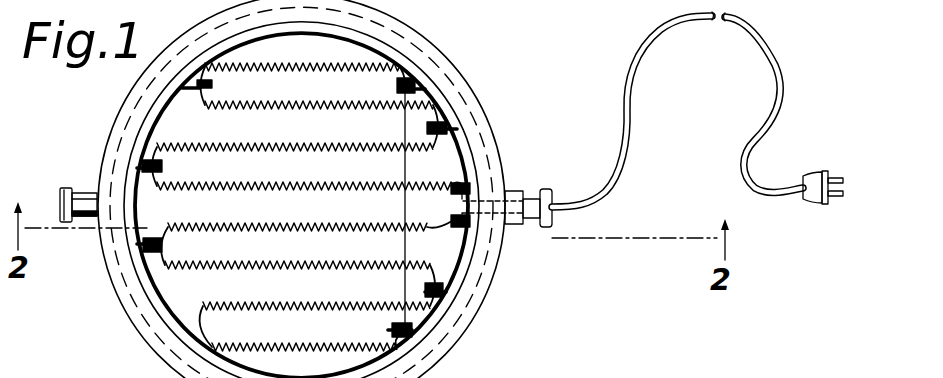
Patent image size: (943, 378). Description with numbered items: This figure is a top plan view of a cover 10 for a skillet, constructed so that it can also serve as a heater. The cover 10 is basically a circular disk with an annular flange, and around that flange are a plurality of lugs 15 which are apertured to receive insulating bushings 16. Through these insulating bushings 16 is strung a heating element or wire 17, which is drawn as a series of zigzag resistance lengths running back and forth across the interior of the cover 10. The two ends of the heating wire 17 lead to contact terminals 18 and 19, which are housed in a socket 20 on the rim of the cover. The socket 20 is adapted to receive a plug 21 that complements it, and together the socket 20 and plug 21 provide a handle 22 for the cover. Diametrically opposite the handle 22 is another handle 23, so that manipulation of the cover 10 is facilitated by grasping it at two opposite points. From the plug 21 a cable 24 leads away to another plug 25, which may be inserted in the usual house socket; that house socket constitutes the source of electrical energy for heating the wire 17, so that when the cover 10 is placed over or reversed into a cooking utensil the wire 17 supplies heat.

The cover 10 is at (461, 345).
The lugs 15 is at (213, 85).
The insulating bushings 16 is at (160, 167).
The heating element or wire 17 is at (306, 184).
The contact terminal 18 is at (508, 225).
The contact terminal 19 is at (512, 194).
The socket 20 is at (524, 222).
The plug 21 is at (553, 219).
The handle 22 is at (540, 190).
The handle 23 is at (85, 219).
The cable 24 is at (624, 167).
The plug 25 is at (803, 204).